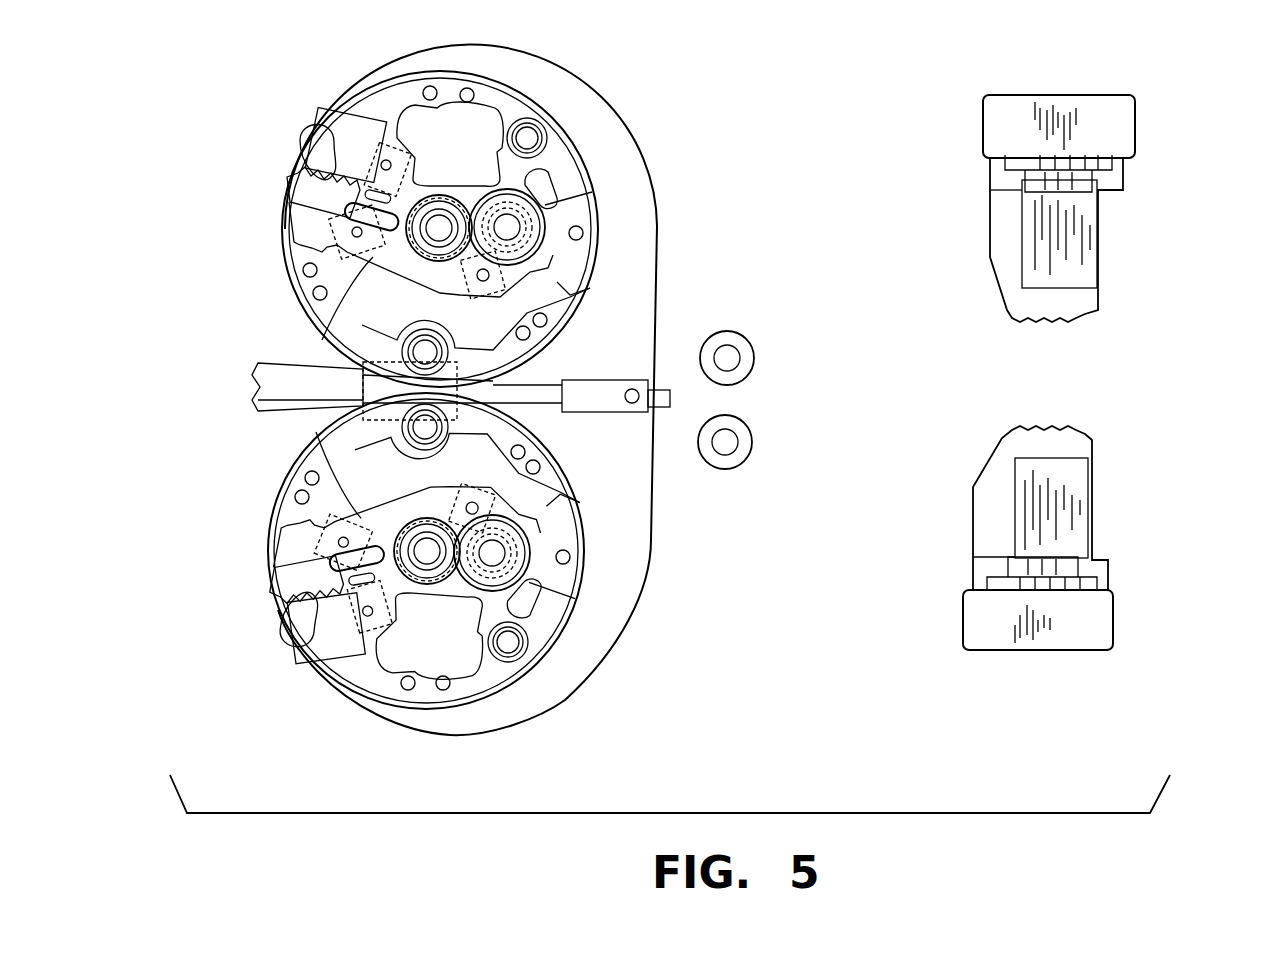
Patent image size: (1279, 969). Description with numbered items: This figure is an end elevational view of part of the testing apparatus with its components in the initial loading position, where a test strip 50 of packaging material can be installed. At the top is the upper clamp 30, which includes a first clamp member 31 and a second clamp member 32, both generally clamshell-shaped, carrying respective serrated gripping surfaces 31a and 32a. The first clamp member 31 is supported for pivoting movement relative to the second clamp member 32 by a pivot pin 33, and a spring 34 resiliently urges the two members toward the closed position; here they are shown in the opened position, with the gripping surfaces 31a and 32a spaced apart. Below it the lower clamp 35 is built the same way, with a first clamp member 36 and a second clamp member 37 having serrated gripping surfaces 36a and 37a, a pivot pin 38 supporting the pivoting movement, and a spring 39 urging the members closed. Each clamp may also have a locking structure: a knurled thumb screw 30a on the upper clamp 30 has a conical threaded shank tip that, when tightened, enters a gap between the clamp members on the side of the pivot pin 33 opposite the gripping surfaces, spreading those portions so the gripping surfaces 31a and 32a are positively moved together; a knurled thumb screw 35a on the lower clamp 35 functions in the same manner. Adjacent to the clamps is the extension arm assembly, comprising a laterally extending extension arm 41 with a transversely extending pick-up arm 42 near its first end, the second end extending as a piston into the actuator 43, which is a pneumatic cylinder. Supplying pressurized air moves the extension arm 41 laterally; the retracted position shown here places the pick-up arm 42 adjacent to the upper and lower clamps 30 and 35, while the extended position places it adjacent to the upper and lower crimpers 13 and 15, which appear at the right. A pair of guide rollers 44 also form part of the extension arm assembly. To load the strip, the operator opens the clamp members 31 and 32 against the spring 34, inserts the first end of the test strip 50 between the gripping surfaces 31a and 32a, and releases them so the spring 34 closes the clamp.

The upper crimper 13 is at (1070, 443).
The lower crimper 15 is at (1080, 306).
The upper clamp 30 is at (228, 204).
The knurled thumb screw 30a is at (523, 217).
The first clamp member 31 is at (510, 105).
The serrated gripping surface 31a is at (333, 138).
The second clamp member 32 is at (318, 313).
The serrated gripping surface 32a is at (330, 240).
The pivot pin 33 is at (436, 232).
The spring 34 is at (417, 187).
The lower clamp 35 is at (214, 627).
The knurled thumb screw 35a is at (530, 524).
The first clamp member 36 is at (472, 682).
The serrated gripping surface 36a is at (323, 620).
The second clamp member 37 is at (378, 510).
The serrated gripping surface 37a is at (300, 570).
The pivot pin 38 is at (507, 600).
The spring 39 is at (430, 557).
The extension arm 41 is at (540, 388).
The pick-up arm 42 is at (632, 386).
The actuator 43 is at (258, 380).
The guide rollers 44 is at (746, 362).
The test strip 50 is at (652, 538).